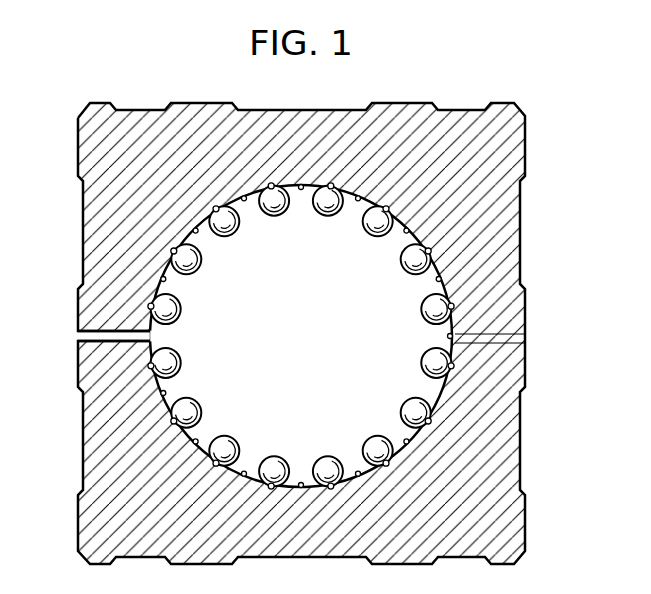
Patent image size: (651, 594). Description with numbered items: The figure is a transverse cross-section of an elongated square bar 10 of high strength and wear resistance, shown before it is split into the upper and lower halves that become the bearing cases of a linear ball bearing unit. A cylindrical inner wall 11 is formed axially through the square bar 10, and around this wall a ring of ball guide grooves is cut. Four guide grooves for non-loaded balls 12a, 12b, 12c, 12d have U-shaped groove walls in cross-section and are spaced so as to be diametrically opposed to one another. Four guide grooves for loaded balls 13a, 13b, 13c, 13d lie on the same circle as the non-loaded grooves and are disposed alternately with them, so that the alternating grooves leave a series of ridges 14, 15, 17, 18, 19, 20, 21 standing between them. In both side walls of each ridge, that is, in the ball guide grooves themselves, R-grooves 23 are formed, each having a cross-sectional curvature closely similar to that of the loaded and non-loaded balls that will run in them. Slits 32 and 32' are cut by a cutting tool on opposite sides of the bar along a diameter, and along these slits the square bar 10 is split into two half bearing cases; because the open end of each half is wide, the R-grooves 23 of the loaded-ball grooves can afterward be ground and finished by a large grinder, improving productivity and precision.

The square bar 10 is at (487, 152).
The cylindrical inner wall 11 is at (341, 213).
The guide groove for non-loaded balls 12a is at (302, 184).
The guide groove for non-loaded balls 12b is at (452, 343).
The guide groove for non-loaded balls 12c is at (305, 488).
The guide groove for non-loaded balls 12d is at (168, 337).
The guide groove for loaded balls 13a is at (410, 231).
The guide groove for loaded balls 13b is at (407, 443).
The guide groove for loaded balls 13c is at (194, 443).
The guide groove for loaded balls 13d is at (195, 229).
The ridge 14 is at (357, 201).
The ridge 15 is at (425, 282).
The ridge 17 is at (355, 470).
The ridge 18 is at (249, 482).
The ridge 19 is at (181, 377).
The ridge 20 is at (176, 283).
The ridge 21 is at (246, 201).
The R-groove 23 is at (386, 464).
The slit 32 is at (96, 309).
The slit 32' is at (520, 334).